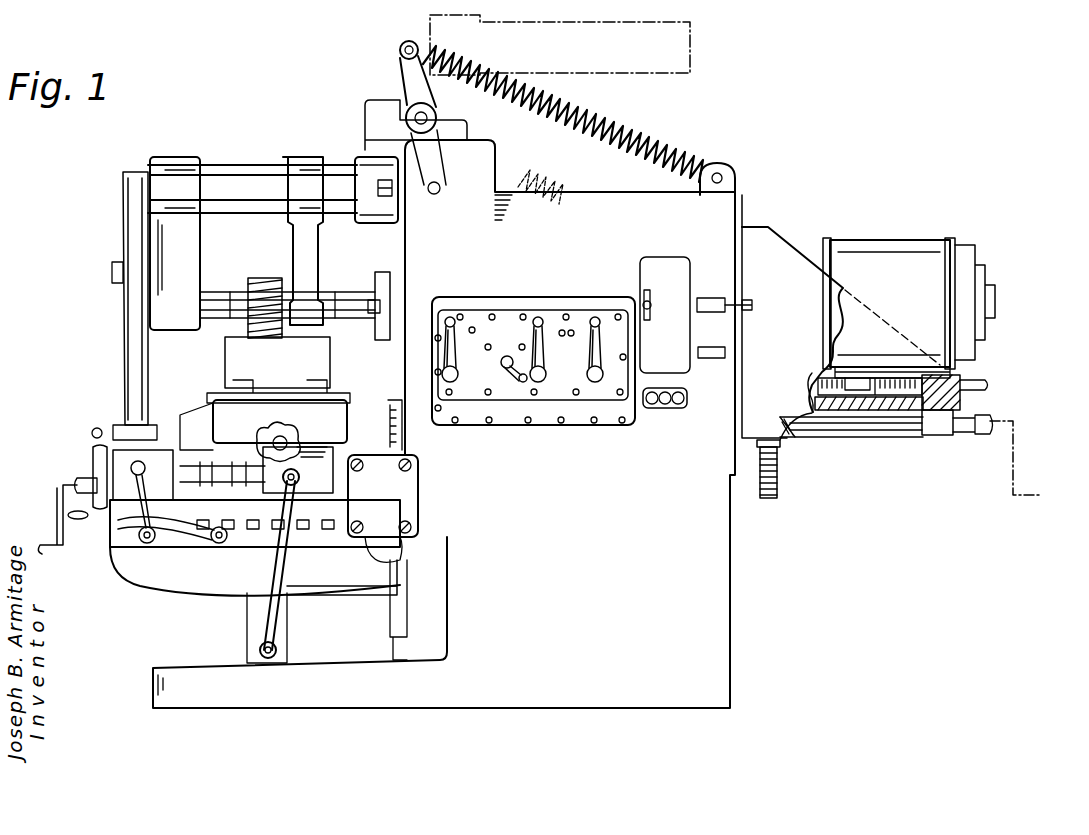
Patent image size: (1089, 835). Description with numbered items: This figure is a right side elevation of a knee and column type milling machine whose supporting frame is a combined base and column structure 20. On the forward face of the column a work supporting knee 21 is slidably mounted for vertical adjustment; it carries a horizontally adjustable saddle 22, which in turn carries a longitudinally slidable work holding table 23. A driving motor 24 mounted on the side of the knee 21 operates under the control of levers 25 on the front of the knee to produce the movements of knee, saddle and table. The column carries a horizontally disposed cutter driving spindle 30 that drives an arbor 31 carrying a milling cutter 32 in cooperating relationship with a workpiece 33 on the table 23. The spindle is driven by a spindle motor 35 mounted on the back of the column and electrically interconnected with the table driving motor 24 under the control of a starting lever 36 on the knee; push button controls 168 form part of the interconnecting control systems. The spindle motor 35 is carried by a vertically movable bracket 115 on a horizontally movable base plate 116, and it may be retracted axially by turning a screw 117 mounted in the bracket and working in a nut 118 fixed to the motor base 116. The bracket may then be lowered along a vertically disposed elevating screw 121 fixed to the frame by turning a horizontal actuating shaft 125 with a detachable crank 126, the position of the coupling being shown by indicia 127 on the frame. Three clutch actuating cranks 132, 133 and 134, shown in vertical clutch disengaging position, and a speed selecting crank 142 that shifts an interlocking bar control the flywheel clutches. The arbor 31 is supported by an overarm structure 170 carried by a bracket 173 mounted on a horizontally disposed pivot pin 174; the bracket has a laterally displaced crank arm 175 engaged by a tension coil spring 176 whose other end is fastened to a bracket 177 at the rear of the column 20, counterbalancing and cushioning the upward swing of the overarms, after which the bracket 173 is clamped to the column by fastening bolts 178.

The combined base and column structure 20 is at (713, 630).
The work supporting knee 21 is at (183, 578).
The saddle 22 is at (200, 437).
The work holding table 23 is at (228, 400).
The driving motor 24 is at (418, 490).
The levers 25 is at (94, 428).
The cutter driving spindle 30 is at (388, 275).
The arbor 31 is at (210, 297).
The milling cutter 32 is at (265, 278).
The workpiece 33 is at (232, 349).
The spindle motor 35 is at (884, 240).
The starting lever 36 is at (170, 496).
The motor bracket 115 is at (773, 236).
The motor base plate 116 is at (908, 363).
The screw 117 is at (885, 380).
The nut 118 is at (815, 393).
The elevating screw 121 is at (770, 495).
The actuating shaft 125 is at (897, 428).
The detachable crank 126 is at (1022, 425).
The indicia 127 is at (715, 312).
The clutch actuating crank 132 is at (450, 317).
The clutch actuating crank 133 is at (540, 317).
The clutch actuating crank 134 is at (597, 317).
The speed selecting crank 142 is at (524, 383).
The push button controls 168 is at (678, 406).
The overarm structure 170 is at (228, 172).
The bracket 173 is at (355, 160).
The pivot pin 174 is at (418, 120).
The crank arm 175 is at (410, 85).
The tension coil spring 176 is at (590, 110).
The bracket 177 is at (719, 175).
The fastening bolts 178 is at (383, 190).